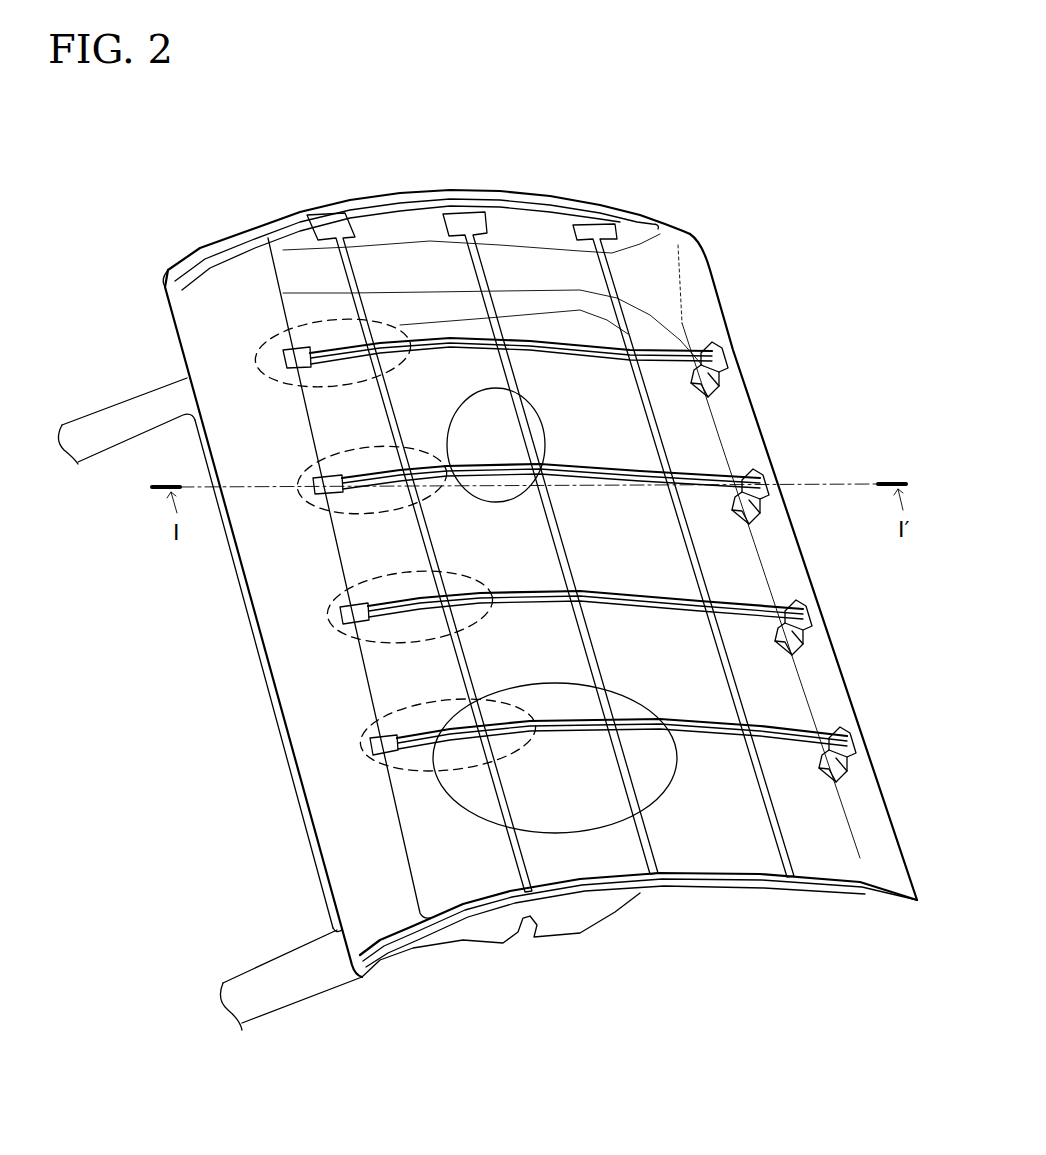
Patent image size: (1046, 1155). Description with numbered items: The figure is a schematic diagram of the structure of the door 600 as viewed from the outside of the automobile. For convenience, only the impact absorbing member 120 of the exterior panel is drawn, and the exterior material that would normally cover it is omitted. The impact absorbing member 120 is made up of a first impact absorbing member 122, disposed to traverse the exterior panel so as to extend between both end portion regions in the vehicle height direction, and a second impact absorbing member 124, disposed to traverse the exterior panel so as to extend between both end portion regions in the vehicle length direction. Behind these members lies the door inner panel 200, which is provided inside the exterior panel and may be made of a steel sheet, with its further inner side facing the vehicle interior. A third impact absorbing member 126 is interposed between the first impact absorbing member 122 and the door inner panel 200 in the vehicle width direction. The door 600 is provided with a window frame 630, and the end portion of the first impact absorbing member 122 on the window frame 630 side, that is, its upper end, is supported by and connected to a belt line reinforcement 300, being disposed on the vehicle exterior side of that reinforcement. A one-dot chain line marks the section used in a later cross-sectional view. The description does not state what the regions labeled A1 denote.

The impact absorbing member 120 is at (510, 124).
The first impact absorbing member 122 is at (427, 337).
The second impact absorbing member 124 is at (483, 280).
The third impact absorbing member 126 is at (720, 383).
The door inner panel 200 is at (743, 857).
The belt line reinforcement 300 is at (233, 372).
The door 600 is at (950, 980).
The window frame 630 is at (96, 440).
The region A1 is at (323, 318).